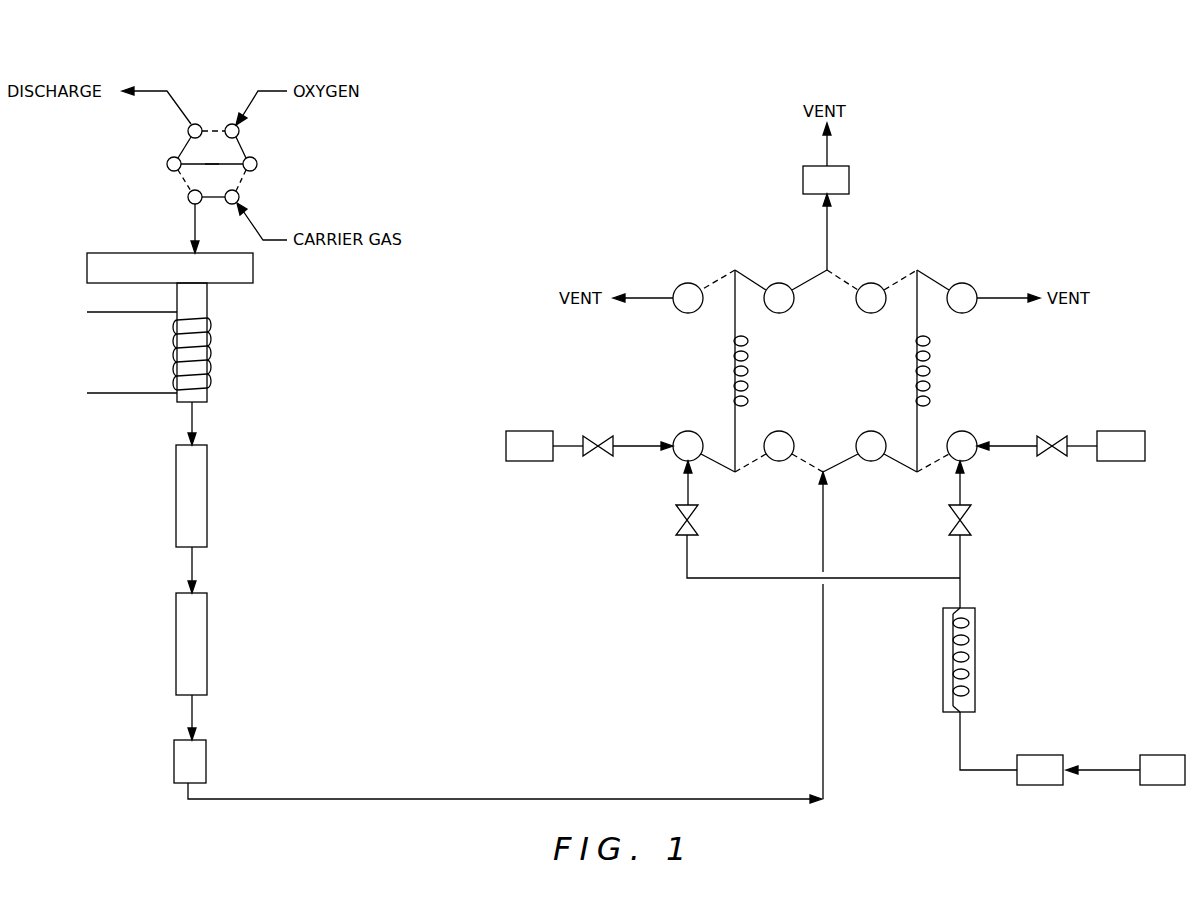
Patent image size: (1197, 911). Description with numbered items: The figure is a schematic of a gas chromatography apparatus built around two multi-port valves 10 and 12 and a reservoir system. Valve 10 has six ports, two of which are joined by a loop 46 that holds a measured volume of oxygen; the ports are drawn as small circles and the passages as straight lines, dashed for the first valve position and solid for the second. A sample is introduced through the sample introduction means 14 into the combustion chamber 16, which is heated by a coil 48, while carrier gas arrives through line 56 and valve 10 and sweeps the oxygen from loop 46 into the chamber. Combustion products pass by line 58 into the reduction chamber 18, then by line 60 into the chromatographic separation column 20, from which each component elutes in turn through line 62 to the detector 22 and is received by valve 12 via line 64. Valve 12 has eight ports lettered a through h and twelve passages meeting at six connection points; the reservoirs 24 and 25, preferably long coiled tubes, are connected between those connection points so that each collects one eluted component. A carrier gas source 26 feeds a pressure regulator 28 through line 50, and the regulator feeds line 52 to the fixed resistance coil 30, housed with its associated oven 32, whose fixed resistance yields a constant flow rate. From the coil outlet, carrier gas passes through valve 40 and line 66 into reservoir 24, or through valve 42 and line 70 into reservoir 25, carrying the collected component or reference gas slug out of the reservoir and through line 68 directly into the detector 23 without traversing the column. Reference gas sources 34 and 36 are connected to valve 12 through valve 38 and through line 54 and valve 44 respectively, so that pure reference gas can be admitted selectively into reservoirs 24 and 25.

The multi-port valve 10 is at (223, 155).
The multi-port valve 12 is at (836, 377).
The sample introduction means 14 is at (203, 277).
The combustion chamber 16 is at (203, 306).
The reduction chamber 18 is at (207, 498).
The chromatographic separation column 20 is at (207, 645).
The detector 22 is at (206, 763).
The detector 23 is at (849, 182).
The reservoir 24 is at (733, 374).
The reservoir 25 is at (931, 374).
The carrier gas source 26 is at (1173, 780).
The pressure regulator 28 is at (1050, 780).
The fixed resistance coil 30 is at (970, 620).
The oven 32 is at (975, 674).
The reference gas source 34 is at (540, 456).
The reference gas source 36 is at (1132, 456).
The valve 38 is at (598, 436).
The valve 40 is at (676, 520).
The valve 42 is at (971, 520).
The valve 44 is at (1052, 436).
The loop 46 is at (213, 165).
The coil 48 is at (213, 348).
The line 50 is at (1105, 768).
The line 52 is at (957, 742).
The line 54 is at (1012, 444).
The line 56 is at (193, 215).
The line 58 is at (194, 415).
The line 60 is at (193, 565).
The line 62 is at (193, 713).
The line 64 is at (485, 797).
The line 66 is at (760, 580).
The line 68 is at (829, 232).
The line 70 is at (962, 553).